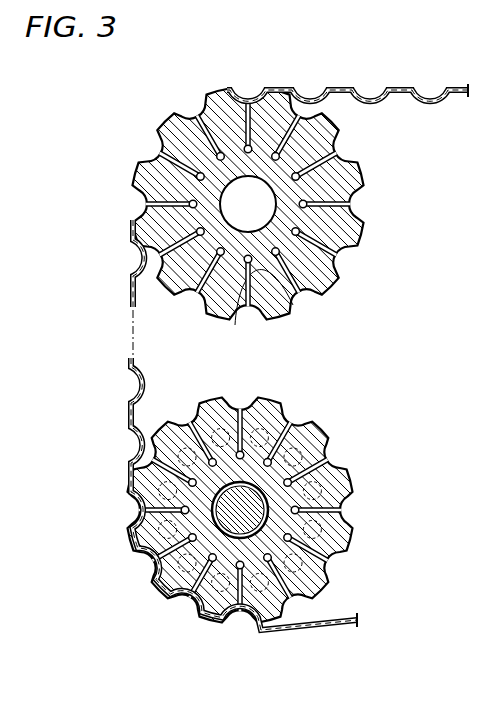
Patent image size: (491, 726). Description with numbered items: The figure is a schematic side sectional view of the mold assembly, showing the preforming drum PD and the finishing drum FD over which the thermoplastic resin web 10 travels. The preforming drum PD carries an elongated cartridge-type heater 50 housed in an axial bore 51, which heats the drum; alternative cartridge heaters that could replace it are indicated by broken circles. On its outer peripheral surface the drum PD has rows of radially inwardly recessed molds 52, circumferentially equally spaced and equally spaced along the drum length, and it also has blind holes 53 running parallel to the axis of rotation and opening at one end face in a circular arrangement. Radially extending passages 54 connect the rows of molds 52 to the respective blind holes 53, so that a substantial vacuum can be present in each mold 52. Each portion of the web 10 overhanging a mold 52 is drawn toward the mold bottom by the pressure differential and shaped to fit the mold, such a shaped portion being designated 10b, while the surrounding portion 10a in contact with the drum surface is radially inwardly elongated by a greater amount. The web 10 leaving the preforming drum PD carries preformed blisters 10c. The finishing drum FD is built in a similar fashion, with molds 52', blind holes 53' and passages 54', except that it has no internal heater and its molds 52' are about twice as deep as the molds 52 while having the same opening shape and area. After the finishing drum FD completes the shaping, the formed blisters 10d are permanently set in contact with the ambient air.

The thermoplastic resin web 10 is at (350, 626).
The web portion in contact with the drum surface 10a is at (205, 625).
The inwardly deformed web portion 10b is at (243, 628).
The preformed blisters 10c is at (130, 397).
The formed blisters 10d is at (372, 98).
The cartridge-type heater 50 is at (243, 495).
The axial bore 51 is at (252, 484).
The molds 52 is at (240, 499).
The molds of the finishing drum 52' is at (248, 227).
The blind holes 53 is at (235, 566).
The blind holes of the finishing drum 53' is at (270, 256).
The radially extending passages 54 is at (229, 545).
The radially extending passages of the finishing drum 54' is at (248, 235).
The finishing drum FD is at (132, 226).
The preforming drum PD is at (130, 531).